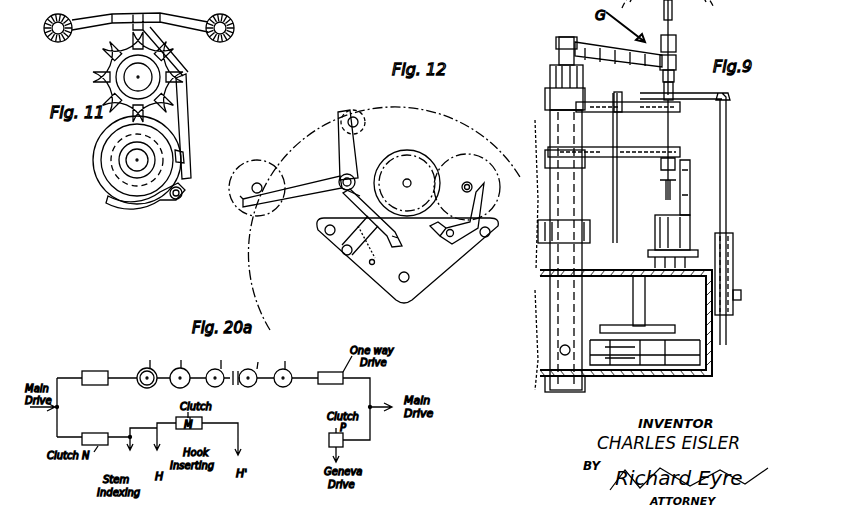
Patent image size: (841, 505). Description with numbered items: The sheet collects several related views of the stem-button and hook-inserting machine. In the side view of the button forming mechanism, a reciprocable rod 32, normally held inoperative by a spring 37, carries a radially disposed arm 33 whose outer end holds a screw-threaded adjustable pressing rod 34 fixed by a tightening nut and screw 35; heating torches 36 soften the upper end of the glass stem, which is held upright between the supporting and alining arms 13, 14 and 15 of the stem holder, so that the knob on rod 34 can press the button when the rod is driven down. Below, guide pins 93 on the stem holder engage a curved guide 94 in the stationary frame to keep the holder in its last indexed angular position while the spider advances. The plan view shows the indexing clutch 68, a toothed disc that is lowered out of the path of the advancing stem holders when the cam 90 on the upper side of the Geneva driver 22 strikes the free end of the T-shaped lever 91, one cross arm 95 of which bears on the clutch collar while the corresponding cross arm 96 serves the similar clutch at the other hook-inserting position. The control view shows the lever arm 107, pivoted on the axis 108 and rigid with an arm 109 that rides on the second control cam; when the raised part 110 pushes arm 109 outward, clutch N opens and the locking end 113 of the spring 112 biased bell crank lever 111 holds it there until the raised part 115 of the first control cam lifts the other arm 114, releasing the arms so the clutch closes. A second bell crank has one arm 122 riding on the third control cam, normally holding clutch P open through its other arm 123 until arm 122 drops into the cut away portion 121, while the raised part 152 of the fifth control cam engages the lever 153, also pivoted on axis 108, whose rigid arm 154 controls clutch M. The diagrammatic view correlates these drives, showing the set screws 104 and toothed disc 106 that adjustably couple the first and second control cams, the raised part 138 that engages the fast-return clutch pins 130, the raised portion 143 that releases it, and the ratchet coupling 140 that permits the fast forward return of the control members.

In FIG. 11, the clutch 68 is at (50, 42).
In FIG. 11, the cross arm 96 is at (95, 30).
In FIG. 11, the cross arm end 95 is at (195, 38).
In FIG. 11, the T-shaped lever 91 is at (190, 132).
In FIG. 11, the Geneva driver 22 is at (105, 170).
In FIG. 11, the cam 90 is at (134, 201).
In FIG. 12, the arm 154 is at (249, 206).
In FIG. 12, the lever arm 107 is at (348, 110).
In FIG. 12, the lever 153 is at (336, 224).
In FIG. 12, the cut away portion 121 is at (407, 183).
In FIG. 20A, the cut away portion 121 is at (139, 374).
In FIG. 12, the bell crank lever arm 123 is at (473, 212).
In FIG. 12, the raised part 152 is at (405, 237).
In FIG. 20A, the raised part 152 is at (176, 388).
In FIG. 12, the axis 108 is at (360, 197).
In FIG. 12, the raised part 110 is at (400, 234).
In FIG. 20A, the raised part 110 is at (212, 369).
In FIG. 12, the bell crank lever arm 114 is at (326, 239).
In FIG. 12, the arm 109 is at (342, 247).
In FIG. 12, the locking end 113 is at (374, 242).
In FIG. 12, the bell crank lever 111 is at (366, 250).
In FIG. 12, the spring 112 is at (372, 265).
In FIG. 12, the bell crank lever arm 122 is at (456, 240).
In FIG. 9, the spring 37 is at (550, 75).
In FIG. 9, the reciprocable rod 32 is at (558, 58).
In FIG. 9, the radially disposed arm 33 is at (606, 52).
In FIG. 9, the adjustable pressing rod 34 is at (676, 44).
In FIG. 9, the tightening nut and screw 35 is at (676, 60).
In FIG. 9, the supporting and alining arm 15 is at (682, 112).
In FIG. 9, the heating torch 36 is at (729, 95).
In FIG. 9, the supporting and alining arm 14 is at (688, 172).
In FIG. 9, the supporting and alining arm 13 is at (662, 186).
In FIG. 9, the guide pins 93 is at (655, 258).
In FIG. 9, the curved guide 94 is at (694, 268).
In FIG. 20A, the clutch pins 130 is at (92, 371).
In FIG. 20A, the raised part 138 is at (141, 386).
In FIG. 20A, the set screws 104 is at (233, 385).
In FIG. 20A, the circular toothed disc 106 is at (240, 385).
In FIG. 20A, the raised portion 143 is at (257, 384).
In FIG. 20A, the raised part 115 is at (292, 372).
In FIG. 20A, the ratchet coupling 140 is at (330, 384).